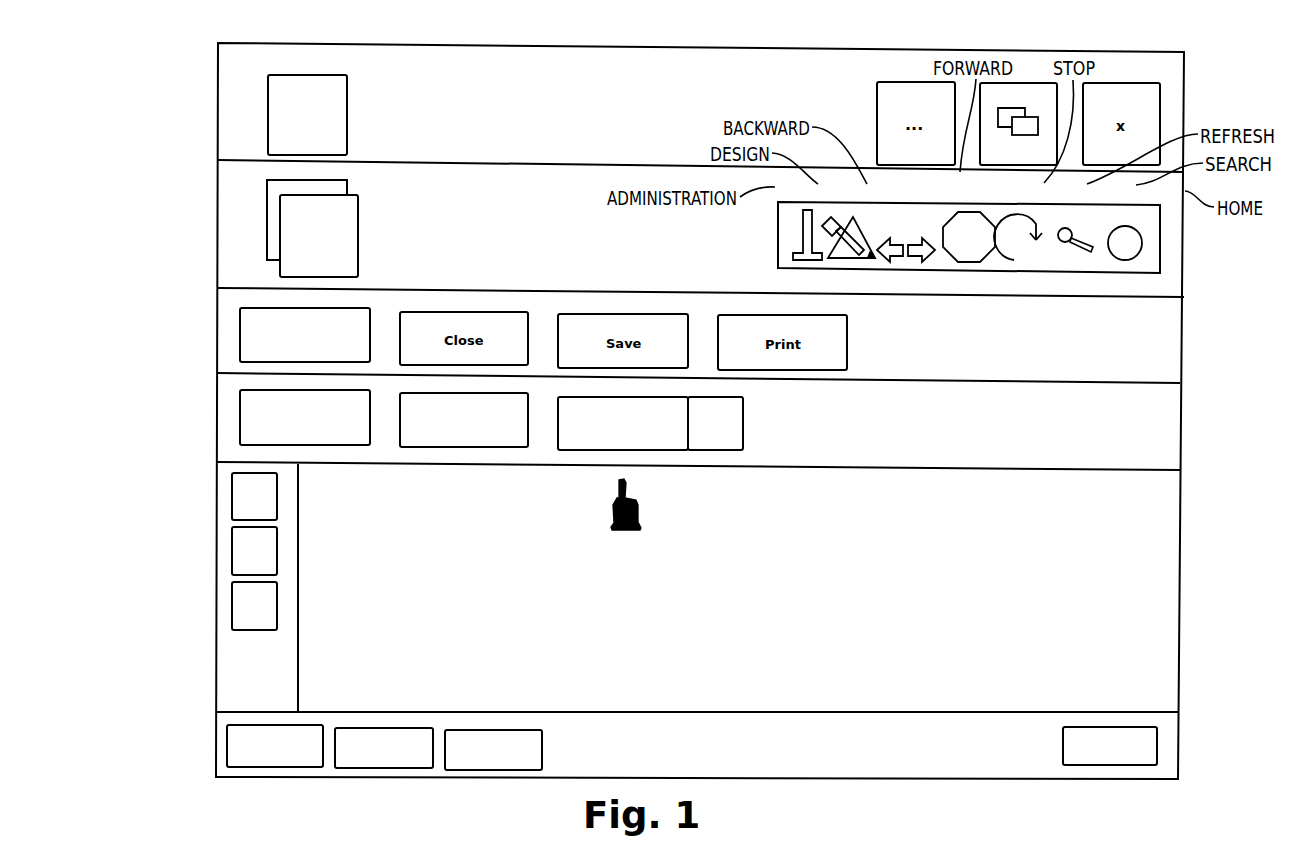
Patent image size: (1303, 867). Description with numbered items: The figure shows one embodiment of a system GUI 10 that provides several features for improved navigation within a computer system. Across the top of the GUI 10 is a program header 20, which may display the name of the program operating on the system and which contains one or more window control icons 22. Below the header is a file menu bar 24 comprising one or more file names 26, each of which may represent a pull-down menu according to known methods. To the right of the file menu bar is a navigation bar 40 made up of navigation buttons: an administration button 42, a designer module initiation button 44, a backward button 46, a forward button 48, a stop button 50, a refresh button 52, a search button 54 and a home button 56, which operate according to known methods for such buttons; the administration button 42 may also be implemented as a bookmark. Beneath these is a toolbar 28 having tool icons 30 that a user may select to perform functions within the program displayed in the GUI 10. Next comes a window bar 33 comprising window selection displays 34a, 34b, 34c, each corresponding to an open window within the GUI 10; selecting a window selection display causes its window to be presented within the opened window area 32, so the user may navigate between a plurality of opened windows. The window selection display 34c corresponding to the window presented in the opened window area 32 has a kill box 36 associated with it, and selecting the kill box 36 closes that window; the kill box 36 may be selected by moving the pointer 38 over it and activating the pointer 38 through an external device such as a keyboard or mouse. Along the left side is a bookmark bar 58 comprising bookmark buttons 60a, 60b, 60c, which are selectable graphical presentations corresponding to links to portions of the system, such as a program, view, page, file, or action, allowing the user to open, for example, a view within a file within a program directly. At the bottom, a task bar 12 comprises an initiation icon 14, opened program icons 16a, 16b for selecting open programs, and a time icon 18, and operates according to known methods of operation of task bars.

The system GUI 10 is at (212, 447).
The task bar 12 is at (208, 716).
The initiation icon 14 is at (270, 768).
The opened program icon 16a is at (383, 769).
The opened program icon 16b is at (492, 772).
The time icon 18 is at (1110, 767).
The program header 20 is at (252, 100).
The window control icon 22 is at (1021, 83).
The file menu bar 24 is at (258, 232).
The file name 26 is at (394, 256).
The toolbar 28 is at (262, 295).
The tool icon 30 is at (240, 338).
The opened window area 32 is at (1142, 585).
The window bar 33 is at (1142, 415).
The window selection display 34a is at (305, 391).
The window selection display 34b is at (465, 393).
The window selection display 34c is at (628, 397).
The kill box 36 is at (720, 397).
The pointer 38 is at (713, 470).
The navigation bar 40 is at (1150, 244).
The administration button 42 is at (804, 236).
The designer module initiation button 44 is at (847, 226).
The backward button 46 is at (902, 243).
The forward button 48 is at (910, 246).
The stop button 50 is at (990, 216).
The refresh button 52 is at (1037, 214).
The search button 54 is at (1080, 229).
The home button 56 is at (1135, 229).
The bookmark bar 58 is at (230, 660).
The bookmark button 60a is at (232, 496).
The bookmark button 60b is at (232, 553).
The bookmark button 60c is at (232, 607).